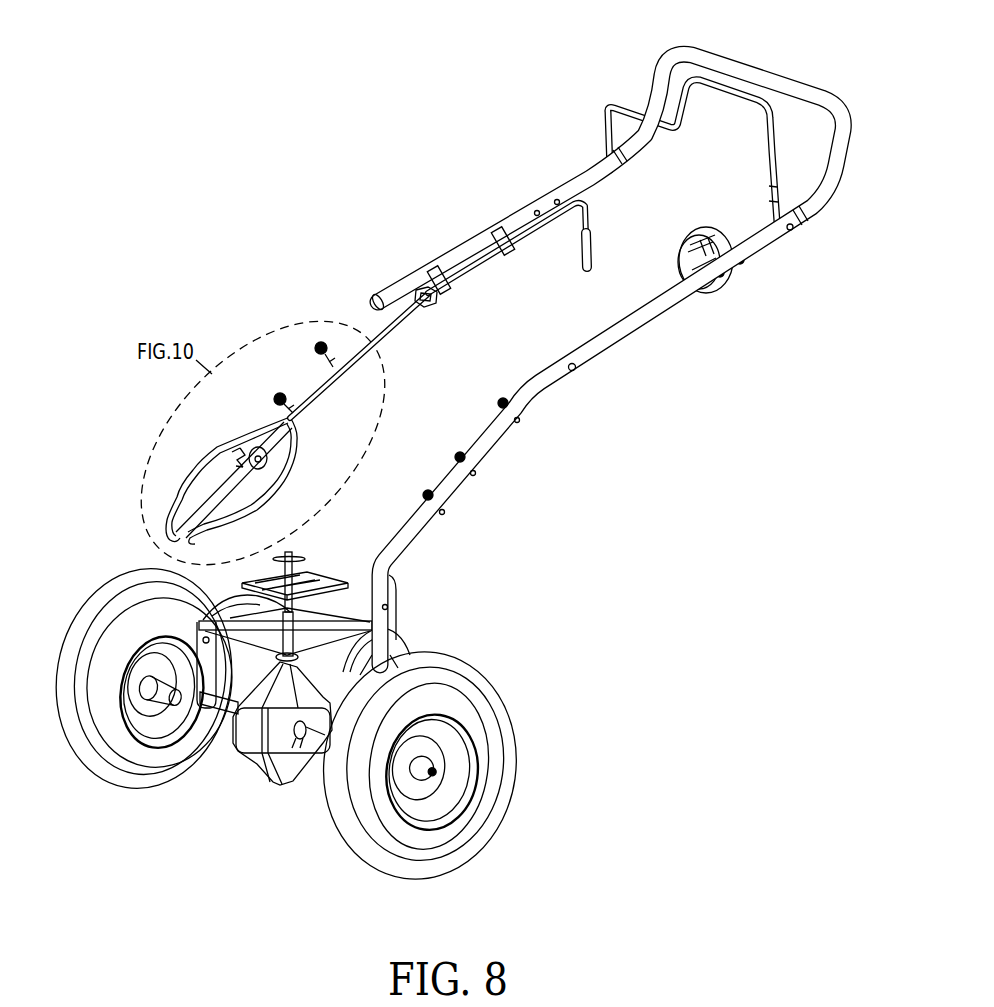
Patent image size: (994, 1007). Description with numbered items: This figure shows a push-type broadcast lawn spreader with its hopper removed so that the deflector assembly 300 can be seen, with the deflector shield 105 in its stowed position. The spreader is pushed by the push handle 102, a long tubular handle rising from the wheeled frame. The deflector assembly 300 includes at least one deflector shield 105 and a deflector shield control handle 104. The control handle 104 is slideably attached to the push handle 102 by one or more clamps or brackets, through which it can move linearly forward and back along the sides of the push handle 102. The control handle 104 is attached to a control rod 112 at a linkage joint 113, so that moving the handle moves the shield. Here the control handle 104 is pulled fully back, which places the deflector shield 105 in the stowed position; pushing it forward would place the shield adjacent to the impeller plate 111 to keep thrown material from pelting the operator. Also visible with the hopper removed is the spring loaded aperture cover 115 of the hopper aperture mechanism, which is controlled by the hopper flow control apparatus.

The push handle 102 is at (603, 348).
The deflector shield control handle 104 is at (593, 247).
The deflector shield 105 is at (217, 442).
The impeller plate 111 is at (390, 632).
The control rod 112 is at (320, 409).
The linkage joint 113 is at (430, 306).
The spring loaded aperture cover 115 is at (323, 577).
The deflector assembly 300 is at (160, 476).